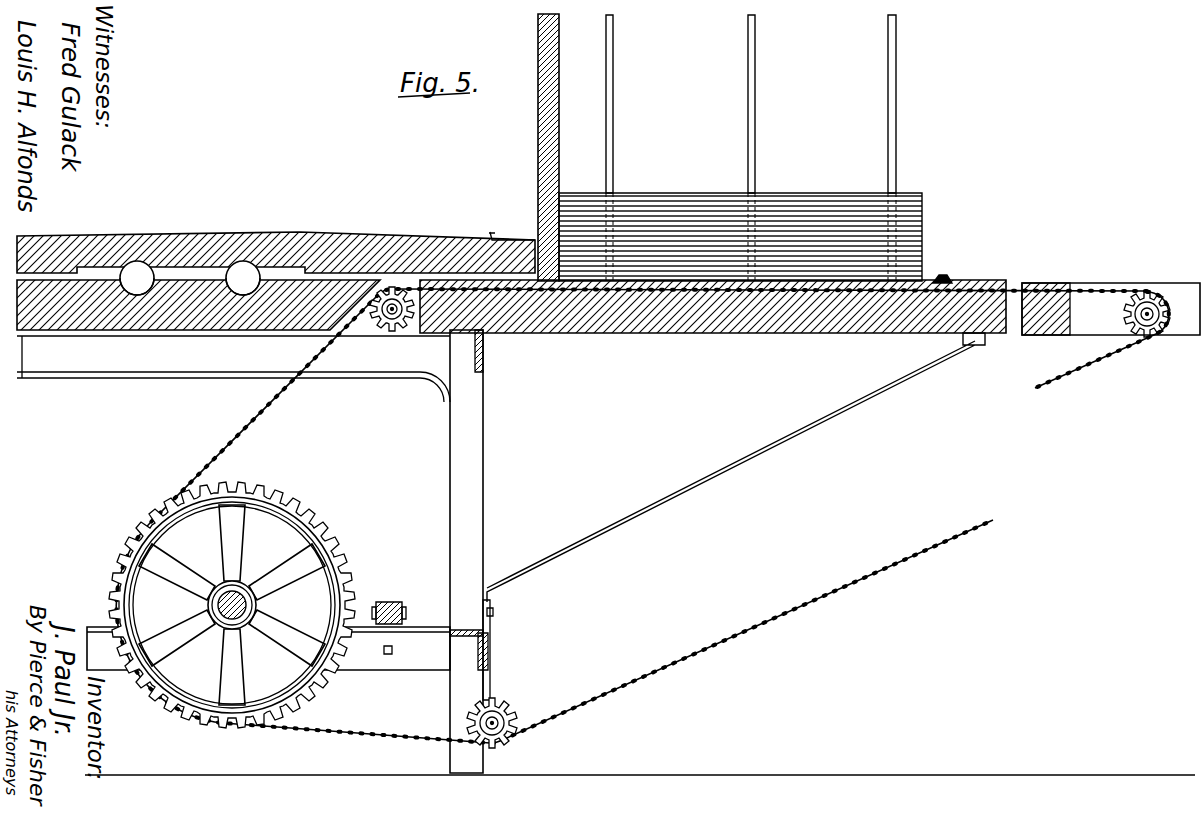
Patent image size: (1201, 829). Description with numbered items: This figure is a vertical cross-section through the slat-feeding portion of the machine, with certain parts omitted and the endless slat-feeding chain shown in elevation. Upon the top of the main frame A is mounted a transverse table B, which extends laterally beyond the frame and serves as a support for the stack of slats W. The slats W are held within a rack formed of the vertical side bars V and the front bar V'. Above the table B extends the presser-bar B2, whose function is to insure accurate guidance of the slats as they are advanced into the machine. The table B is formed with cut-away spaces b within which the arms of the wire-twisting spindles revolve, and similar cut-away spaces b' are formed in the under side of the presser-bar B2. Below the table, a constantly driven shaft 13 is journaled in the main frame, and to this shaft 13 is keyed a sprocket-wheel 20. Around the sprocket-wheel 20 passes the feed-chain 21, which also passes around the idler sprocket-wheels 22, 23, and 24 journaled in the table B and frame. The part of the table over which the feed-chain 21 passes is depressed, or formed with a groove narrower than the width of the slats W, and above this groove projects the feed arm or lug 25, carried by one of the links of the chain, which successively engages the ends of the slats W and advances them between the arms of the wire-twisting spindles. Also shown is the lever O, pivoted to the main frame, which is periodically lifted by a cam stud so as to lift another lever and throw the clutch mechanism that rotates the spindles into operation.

The main frame top A is at (482, 466).
The transverse table B is at (196, 322).
The presser-bar B2 is at (290, 240).
The cut-away spaces b is at (183, 326).
The cut-away spaces b' is at (200, 236).
The front bar V' is at (563, 147).
The vertical side bars V is at (764, 148).
The slats W is at (678, 212).
The lever O is at (393, 602).
The shaft 13 is at (246, 605).
The sprocket-wheel 20 is at (232, 605).
The feed-chain 21 is at (268, 403).
The idler sprocket-wheel 22 is at (392, 331).
The idler sprocket-wheel 23 is at (1147, 330).
The idler sprocket-wheel 24 is at (515, 713).
The feed arm or lug 25 is at (944, 282).